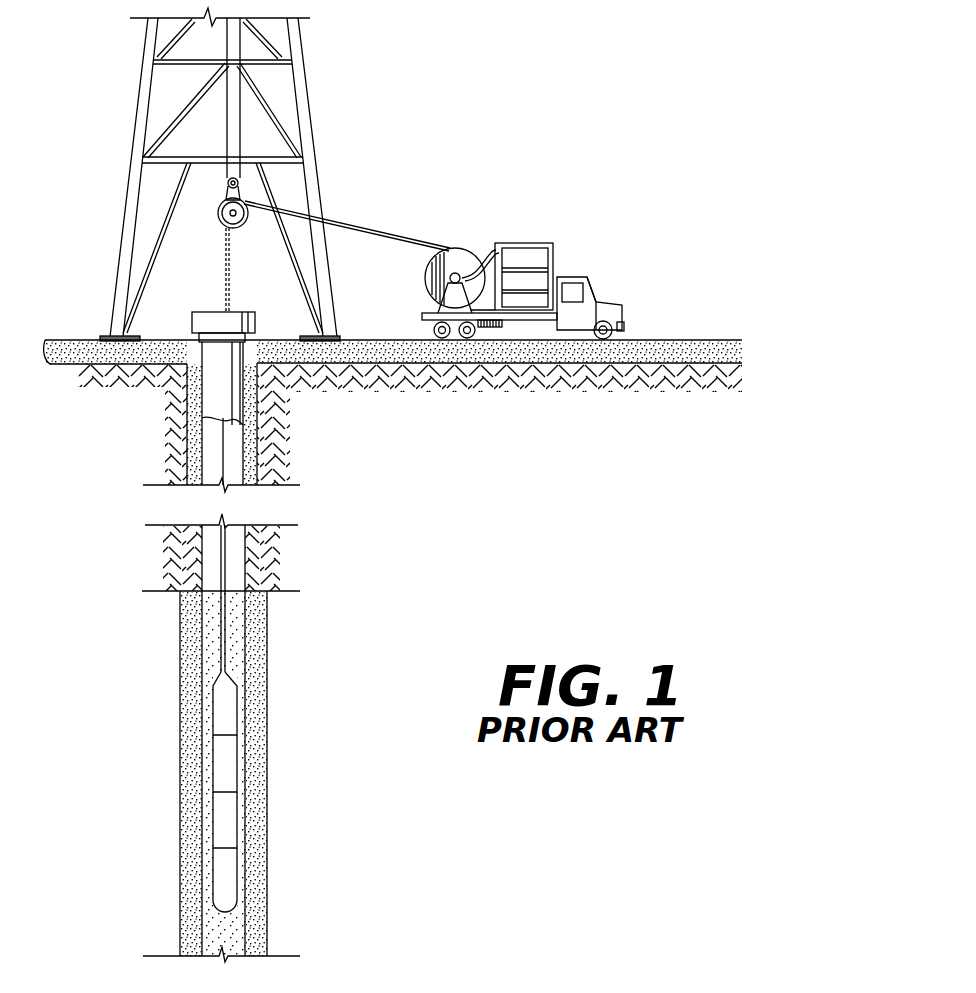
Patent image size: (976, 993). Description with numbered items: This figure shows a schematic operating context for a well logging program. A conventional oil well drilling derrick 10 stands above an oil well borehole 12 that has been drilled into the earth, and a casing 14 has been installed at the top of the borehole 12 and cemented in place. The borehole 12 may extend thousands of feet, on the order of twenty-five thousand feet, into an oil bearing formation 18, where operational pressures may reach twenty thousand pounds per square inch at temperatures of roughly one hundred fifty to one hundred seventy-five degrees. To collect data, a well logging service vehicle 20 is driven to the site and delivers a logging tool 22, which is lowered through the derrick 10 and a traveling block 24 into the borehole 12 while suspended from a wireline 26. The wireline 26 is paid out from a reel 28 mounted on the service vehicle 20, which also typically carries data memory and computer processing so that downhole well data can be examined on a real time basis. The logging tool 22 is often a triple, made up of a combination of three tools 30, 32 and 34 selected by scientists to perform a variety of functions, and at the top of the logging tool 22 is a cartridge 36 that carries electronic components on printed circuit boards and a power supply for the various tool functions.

The drilling derrick 10 is at (320, 68).
The borehole 12 is at (188, 427).
The casing 14 is at (275, 397).
The oil bearing formation 18 is at (388, 692).
The well logging service vehicle 20 is at (563, 216).
The logging tool 22 is at (211, 833).
The traveling block 24 is at (223, 218).
The wireline 26 is at (227, 618).
The wireline truck with cable reel 28 is at (466, 249).
The tool 30 is at (230, 885).
The tool 32 is at (230, 825).
The tool 34 is at (230, 767).
The cartridge 36 is at (230, 708).